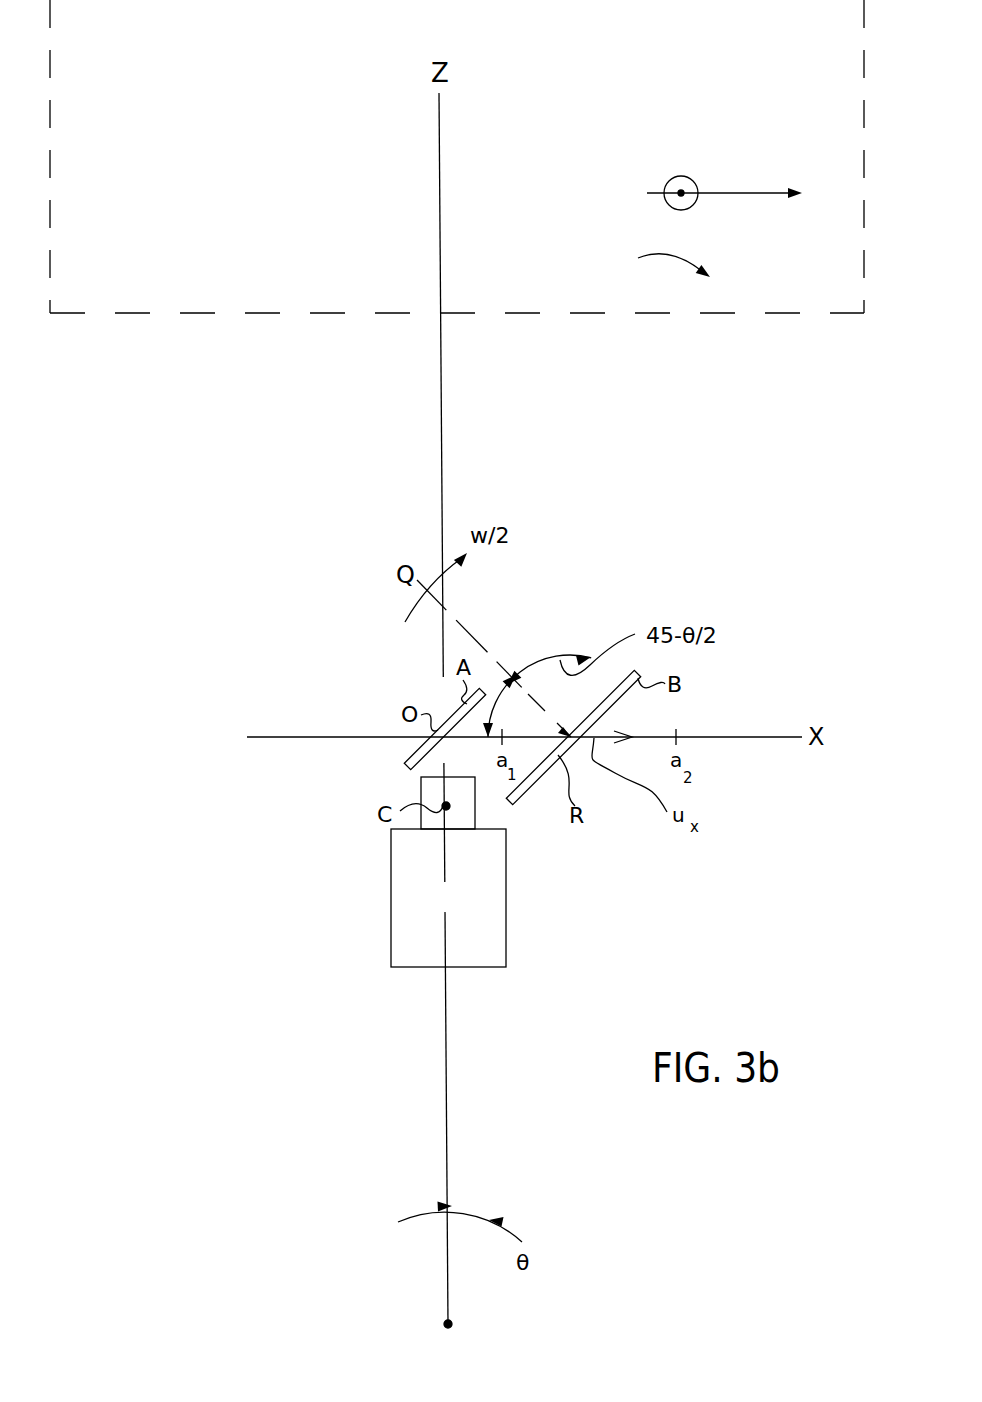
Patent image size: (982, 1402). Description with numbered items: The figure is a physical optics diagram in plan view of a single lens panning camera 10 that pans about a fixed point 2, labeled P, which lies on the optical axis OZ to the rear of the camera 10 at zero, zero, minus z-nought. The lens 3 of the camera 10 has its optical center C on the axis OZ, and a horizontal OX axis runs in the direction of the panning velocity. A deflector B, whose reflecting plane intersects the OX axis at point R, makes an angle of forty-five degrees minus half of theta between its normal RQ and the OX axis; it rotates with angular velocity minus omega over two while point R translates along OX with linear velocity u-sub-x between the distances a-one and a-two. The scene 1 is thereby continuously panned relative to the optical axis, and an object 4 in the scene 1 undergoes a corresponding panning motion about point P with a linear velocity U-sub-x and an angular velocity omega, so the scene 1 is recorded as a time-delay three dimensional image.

The scene 1 is at (228, 137).
The fixed point 2 is at (484, 1342).
The lens 3 is at (476, 821).
The object 4 is at (668, 184).
The camera 10 is at (448, 898).